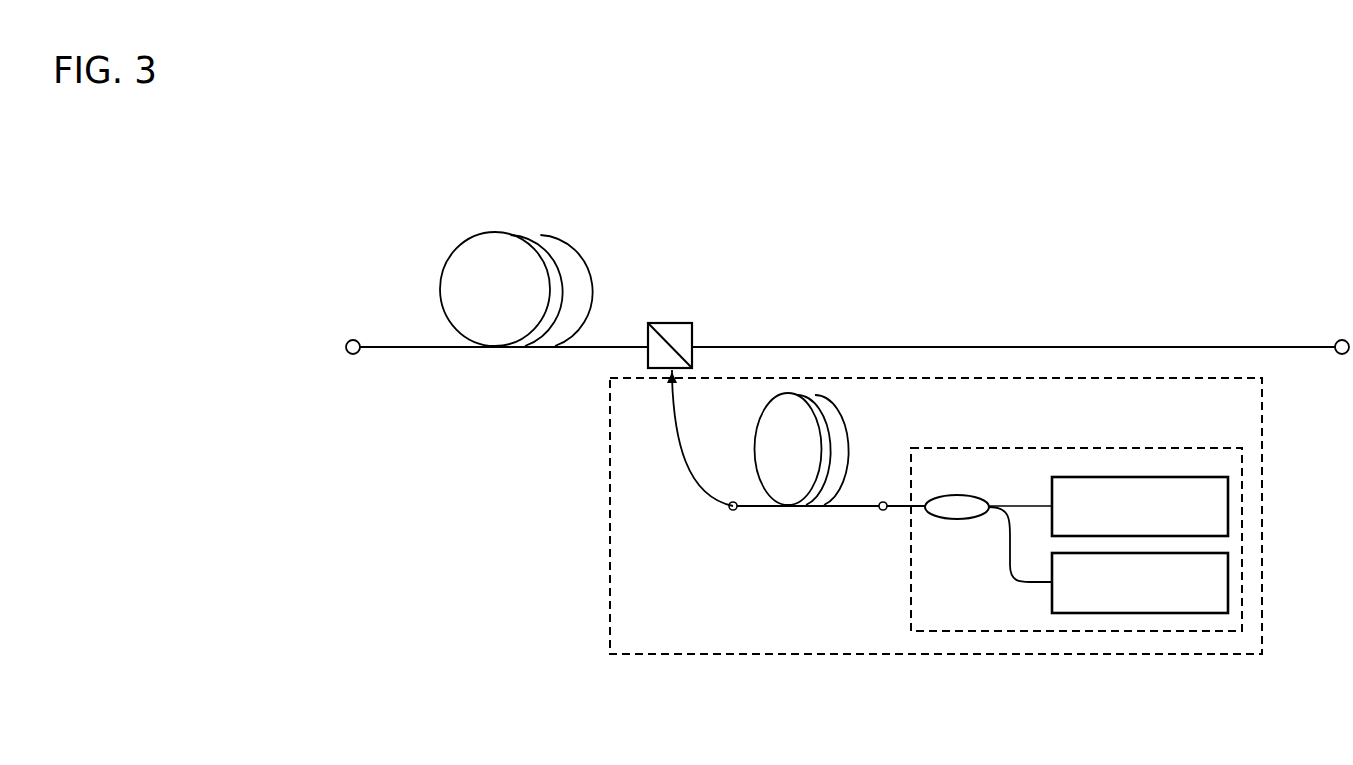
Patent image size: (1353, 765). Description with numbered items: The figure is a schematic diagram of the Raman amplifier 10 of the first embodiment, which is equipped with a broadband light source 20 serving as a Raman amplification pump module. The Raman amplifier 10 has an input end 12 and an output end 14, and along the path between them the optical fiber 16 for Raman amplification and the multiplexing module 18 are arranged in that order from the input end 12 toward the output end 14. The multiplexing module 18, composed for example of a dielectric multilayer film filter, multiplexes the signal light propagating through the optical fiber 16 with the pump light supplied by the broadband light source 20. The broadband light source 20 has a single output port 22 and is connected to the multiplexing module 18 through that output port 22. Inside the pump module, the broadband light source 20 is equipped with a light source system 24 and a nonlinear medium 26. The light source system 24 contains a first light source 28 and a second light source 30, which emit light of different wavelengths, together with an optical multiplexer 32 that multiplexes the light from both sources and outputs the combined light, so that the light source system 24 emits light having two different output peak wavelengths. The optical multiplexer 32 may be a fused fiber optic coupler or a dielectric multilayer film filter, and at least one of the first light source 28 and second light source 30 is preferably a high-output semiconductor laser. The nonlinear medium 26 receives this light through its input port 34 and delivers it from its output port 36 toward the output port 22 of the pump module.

The Raman amplifier 10 is at (1046, 170).
The input end 12 is at (353, 354).
The output end 14 is at (1342, 354).
The optical fiber for Raman amplification 16 is at (493, 231).
The multiplexing module 18 is at (672, 322).
The broadband light source 20 is at (767, 656).
The output port 22 is at (669, 380).
The light source system 24 is at (957, 632).
The nonlinear medium 26 is at (775, 510).
The first light source 28 is at (1228, 505).
The second light source 30 is at (1228, 583).
The optical multiplexer 32 is at (955, 519).
The input port 34 is at (883, 510).
The output port 36 is at (733, 510).